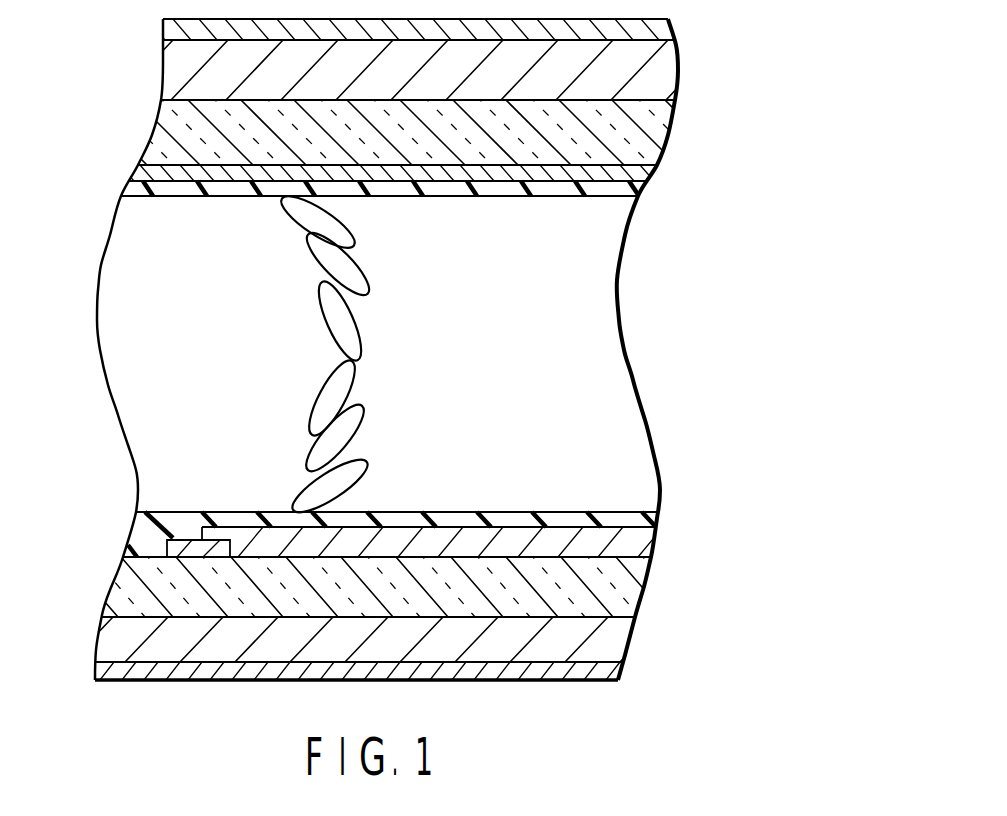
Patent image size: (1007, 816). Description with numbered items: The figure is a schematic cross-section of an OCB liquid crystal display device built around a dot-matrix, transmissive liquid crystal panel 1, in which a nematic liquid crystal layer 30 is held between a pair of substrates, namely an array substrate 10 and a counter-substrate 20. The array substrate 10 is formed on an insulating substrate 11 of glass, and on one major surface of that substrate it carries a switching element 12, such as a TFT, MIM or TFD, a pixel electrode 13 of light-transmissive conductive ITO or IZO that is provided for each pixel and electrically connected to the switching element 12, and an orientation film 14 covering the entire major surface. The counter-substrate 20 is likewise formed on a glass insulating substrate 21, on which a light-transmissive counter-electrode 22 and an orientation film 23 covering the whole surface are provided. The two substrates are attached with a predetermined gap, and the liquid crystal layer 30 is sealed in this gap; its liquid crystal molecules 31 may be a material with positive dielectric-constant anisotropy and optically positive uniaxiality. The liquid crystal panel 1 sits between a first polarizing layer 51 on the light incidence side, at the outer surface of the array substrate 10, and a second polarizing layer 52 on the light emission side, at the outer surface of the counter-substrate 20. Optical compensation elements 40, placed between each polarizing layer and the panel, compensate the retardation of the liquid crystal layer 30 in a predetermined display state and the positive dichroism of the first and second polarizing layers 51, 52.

The liquid crystal panel 1 is at (816, 112).
The array substrate 10 is at (414, 533).
The insulating substrate 11 is at (380, 587).
The switching element 12 is at (182, 538).
The pixel electrode 13 is at (650, 548).
The orientation film 14 is at (658, 518).
The counter-substrate 20 is at (426, 160).
The insulating substrate 21 is at (660, 142).
The counter-electrode 22 is at (648, 172).
The orientation film 23 is at (403, 200).
The liquid crystal layer 30 is at (482, 354).
The liquid crystal molecules 31 is at (348, 337).
The optical compensation elements 40 is at (667, 73).
The first polarizing layer 51 is at (616, 670).
The second polarizing layer 52 is at (672, 37).